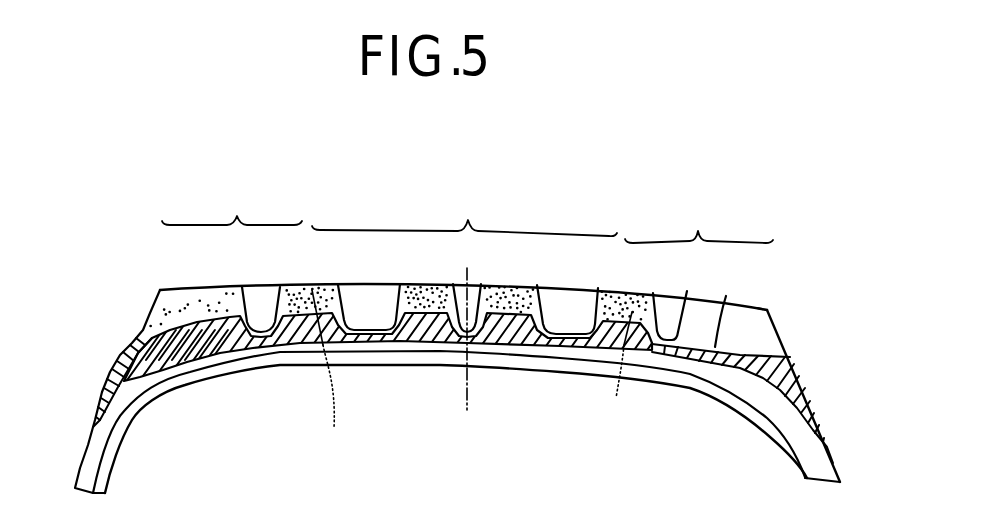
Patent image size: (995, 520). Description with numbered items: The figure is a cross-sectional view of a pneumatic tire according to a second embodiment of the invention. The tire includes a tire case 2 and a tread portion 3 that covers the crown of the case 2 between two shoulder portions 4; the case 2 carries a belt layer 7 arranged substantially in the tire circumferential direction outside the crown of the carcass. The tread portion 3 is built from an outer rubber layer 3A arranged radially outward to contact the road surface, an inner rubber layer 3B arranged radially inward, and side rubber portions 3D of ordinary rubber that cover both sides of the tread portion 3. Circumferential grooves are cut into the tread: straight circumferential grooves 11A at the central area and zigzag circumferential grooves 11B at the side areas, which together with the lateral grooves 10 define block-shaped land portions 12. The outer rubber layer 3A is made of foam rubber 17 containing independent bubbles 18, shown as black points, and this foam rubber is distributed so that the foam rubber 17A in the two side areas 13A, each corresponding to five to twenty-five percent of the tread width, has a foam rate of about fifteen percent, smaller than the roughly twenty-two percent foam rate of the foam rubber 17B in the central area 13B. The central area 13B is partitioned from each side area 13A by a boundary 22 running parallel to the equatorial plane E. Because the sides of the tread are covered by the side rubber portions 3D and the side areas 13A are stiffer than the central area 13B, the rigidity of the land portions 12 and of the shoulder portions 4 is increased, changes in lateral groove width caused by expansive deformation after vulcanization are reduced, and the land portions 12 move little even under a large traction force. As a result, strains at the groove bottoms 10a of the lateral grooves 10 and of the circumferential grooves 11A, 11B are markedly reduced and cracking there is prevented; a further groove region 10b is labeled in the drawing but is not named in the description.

The tire case 2 is at (120, 463).
The tread portion 3 is at (635, 293).
The outer rubber layer 3A is at (283, 328).
The inner rubber layer 3B is at (517, 340).
The side rubber portions 3D is at (120, 375).
The shoulder portions 4 is at (170, 290).
The belt layer 7 is at (237, 358).
The lateral grooves 10 is at (770, 328).
The groove bottoms 10a is at (726, 296).
The lower edge of sidewall rubber 10b is at (770, 353).
The straight circumferential grooves 11A is at (573, 287).
The zigzag circumferential grooves 11B is at (675, 295).
The block-shaped land portions 12 is at (757, 307).
The side areas 13A is at (467, 213).
The central area 13B is at (464, 213).
The cap tread rubber 17 is at (443, 284).
The foam rubber 17A is at (227, 287).
The foam rubber 17B is at (425, 287).
The independent bubbles 18 is at (173, 303).
The boundary 22 is at (472, 374).
The equatorial plane E is at (473, 279).